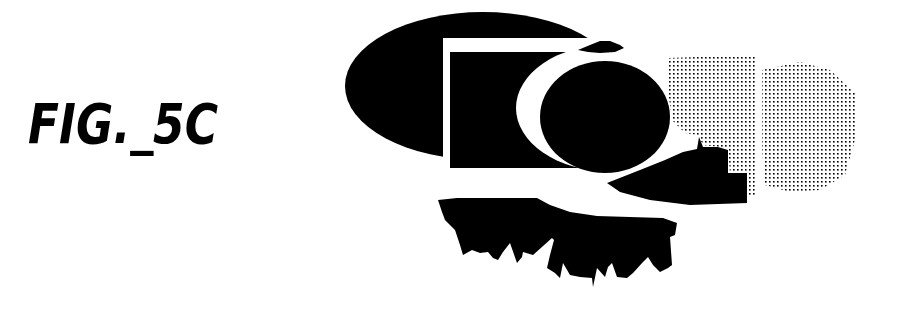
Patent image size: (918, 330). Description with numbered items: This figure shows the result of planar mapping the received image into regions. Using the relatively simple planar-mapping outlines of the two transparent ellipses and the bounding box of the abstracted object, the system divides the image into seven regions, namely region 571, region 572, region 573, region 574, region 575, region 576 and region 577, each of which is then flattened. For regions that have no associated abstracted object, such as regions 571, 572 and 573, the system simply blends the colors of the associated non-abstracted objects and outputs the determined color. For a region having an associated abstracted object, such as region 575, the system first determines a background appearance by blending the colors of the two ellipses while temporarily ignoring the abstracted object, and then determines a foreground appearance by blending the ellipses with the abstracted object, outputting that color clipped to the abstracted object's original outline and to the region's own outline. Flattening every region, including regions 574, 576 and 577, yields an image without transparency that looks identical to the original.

The region 571 is at (387, 130).
The region 572 is at (605, 44).
The region 573 is at (775, 79).
The region 574 is at (456, 167).
The region 575 is at (567, 162).
The region 576 is at (698, 205).
The region 577 is at (497, 255).